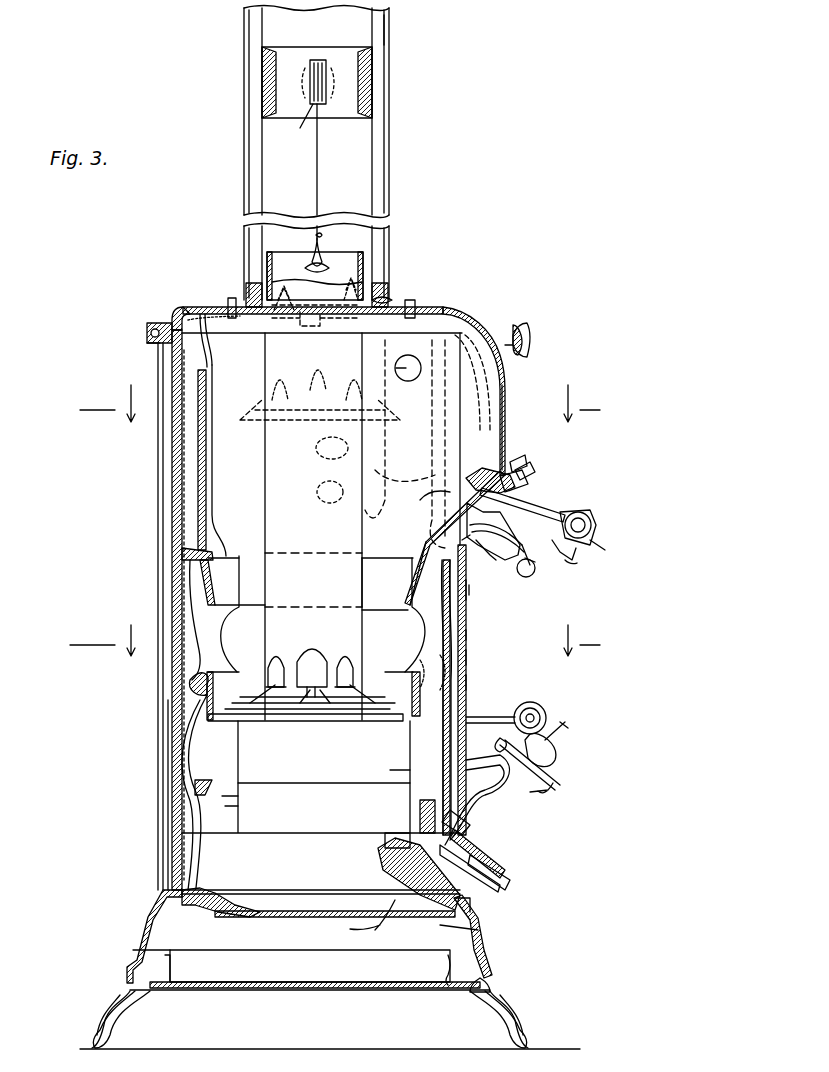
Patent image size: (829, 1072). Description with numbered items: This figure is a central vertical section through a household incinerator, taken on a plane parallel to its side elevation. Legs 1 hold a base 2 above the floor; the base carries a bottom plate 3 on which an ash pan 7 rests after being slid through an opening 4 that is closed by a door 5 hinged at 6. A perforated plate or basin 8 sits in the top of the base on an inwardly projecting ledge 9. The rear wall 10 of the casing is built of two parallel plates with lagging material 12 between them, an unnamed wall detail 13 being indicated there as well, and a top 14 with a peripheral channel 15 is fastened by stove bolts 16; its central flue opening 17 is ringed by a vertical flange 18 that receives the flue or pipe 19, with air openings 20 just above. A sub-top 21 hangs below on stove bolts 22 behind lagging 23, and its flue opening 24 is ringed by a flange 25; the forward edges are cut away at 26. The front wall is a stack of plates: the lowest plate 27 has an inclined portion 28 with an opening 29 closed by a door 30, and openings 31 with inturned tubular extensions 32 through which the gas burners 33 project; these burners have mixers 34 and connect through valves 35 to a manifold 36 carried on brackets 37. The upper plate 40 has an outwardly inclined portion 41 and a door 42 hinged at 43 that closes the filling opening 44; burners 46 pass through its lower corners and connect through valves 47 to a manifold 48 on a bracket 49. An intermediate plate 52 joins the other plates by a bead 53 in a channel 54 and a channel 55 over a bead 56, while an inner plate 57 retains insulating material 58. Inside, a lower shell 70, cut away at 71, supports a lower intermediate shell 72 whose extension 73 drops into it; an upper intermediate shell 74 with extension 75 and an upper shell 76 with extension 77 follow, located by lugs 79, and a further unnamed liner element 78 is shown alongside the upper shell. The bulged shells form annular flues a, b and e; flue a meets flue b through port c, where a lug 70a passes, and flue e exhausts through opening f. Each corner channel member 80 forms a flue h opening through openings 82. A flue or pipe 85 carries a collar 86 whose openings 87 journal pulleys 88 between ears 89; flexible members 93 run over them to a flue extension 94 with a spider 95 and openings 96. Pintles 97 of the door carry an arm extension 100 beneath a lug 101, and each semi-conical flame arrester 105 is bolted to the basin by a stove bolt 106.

The legs 1 is at (135, 1010).
The base 2 is at (140, 935).
The bottom plate 3 is at (250, 990).
The opening 4 is at (451, 923).
The door 5 is at (498, 942).
The hinge 6 is at (530, 984).
The ash pan 7 is at (307, 967).
The perforated plate or basin 8 is at (290, 911).
The ledge 9 is at (206, 482).
The rear wall 10 is at (158, 810).
The lagging material 12 is at (158, 478).
The liner flange 13 is at (182, 572).
The top 14 is at (205, 313).
The peripheral channel 15 is at (150, 347).
The stove bolts 16 is at (147, 330).
The central flue opening 17 is at (392, 300).
The vertical flange 18 is at (246, 296).
The flue or pipe 19 is at (389, 190).
The openings 20 is at (386, 262).
The sub-top 21 is at (212, 340).
The stove bolts 22 is at (232, 300).
The insulating or lagging material 23 is at (200, 310).
The flue opening 24 is at (352, 303).
The flange 25 is at (282, 307).
The cut-away portion 26 is at (455, 317).
The lowest front plate 27 is at (490, 775).
The inclined portion 28 is at (498, 870).
The opening 29 is at (470, 868).
The door 30 is at (495, 860).
The openings 31 is at (470, 830).
The tubular extensions 32 is at (420, 818).
The gas burners 33 is at (540, 800).
The mixers 34 is at (545, 780).
The valves 35 is at (555, 750).
The manifold 36 is at (545, 712).
The brackets 37 is at (520, 695).
The upper front plate 40 is at (495, 529).
The inclined portion 41 is at (420, 500).
The door 42 is at (505, 395).
The hinge 43 is at (512, 483).
The filling opening 44 is at (460, 440).
The burners 46 is at (520, 572).
The valves 47 is at (570, 565).
The manifold 48 is at (591, 525).
The bracket 49 is at (545, 508).
The intermediate plate 52 is at (466, 612).
The bead 53 is at (466, 590).
The channel 54 is at (482, 547).
The channel 55 is at (466, 680).
The bead 56 is at (442, 725).
The plate 57 is at (466, 658).
The insulating material 58 is at (466, 635).
The lower shell 70 is at (185, 862).
The lug 70a is at (225, 745).
The cut-away 71 is at (410, 843).
The lower intermediate shell 72 is at (324, 752).
The extension 73 is at (321, 808).
The upper intermediate shell 74 is at (316, 614).
The extension 75 is at (401, 694).
The upper shell 76 is at (222, 591).
The extension 77 is at (380, 582).
The liner upper 78 is at (212, 460).
The lugs 79 is at (190, 683).
The L-shaped channel member 80 is at (375, 448).
The openings 82 is at (396, 368).
The flue or pipe 85 is at (389, 30).
The collar 86 is at (362, 95).
The openings 87 is at (297, 128).
The pulleys 88 is at (321, 65).
The ears 89 is at (333, 72).
The flexible connecting members 93 is at (317, 168).
The flue extension 94 is at (339, 526).
The spider 95 is at (300, 722).
The openings 96 is at (280, 665).
The gudgeons or pintles 97 is at (528, 480).
The extension 100 is at (530, 465).
The lug 101 is at (520, 450).
The flame arrester 105 is at (395, 880).
The stove bolt 106 is at (372, 924).
The passageway or flue a is at (425, 660).
The passageway or flue b is at (196, 708).
The port or opening c is at (200, 785).
The passageway or flue e is at (422, 585).
The opening f is at (215, 560).
The flue h is at (372, 492).